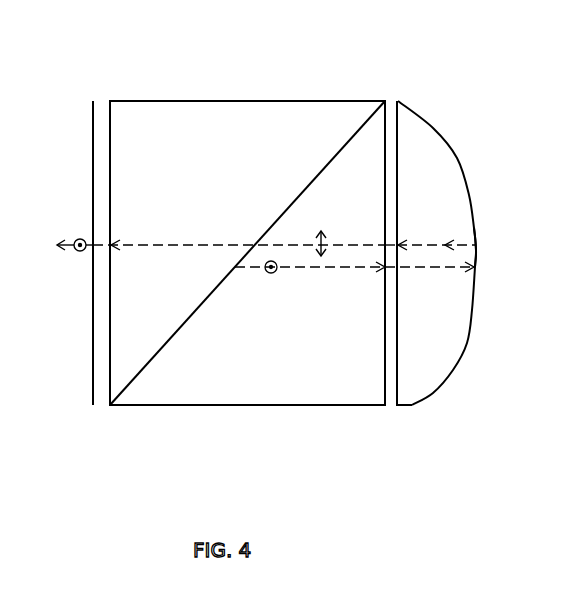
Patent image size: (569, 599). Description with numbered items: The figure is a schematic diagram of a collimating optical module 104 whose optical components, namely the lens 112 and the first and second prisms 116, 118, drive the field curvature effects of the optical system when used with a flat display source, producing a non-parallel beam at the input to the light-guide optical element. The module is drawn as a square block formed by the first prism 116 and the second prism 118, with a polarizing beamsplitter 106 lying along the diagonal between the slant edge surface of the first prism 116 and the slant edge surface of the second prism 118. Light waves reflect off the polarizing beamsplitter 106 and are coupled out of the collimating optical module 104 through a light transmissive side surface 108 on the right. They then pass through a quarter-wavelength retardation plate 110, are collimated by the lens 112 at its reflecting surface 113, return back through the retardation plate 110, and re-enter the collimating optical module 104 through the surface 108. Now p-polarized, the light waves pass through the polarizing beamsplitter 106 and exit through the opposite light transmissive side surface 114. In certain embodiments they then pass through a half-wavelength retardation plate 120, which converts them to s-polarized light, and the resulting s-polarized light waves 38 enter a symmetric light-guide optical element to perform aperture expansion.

The collimating optical module 104 is at (324, 76).
The polarizing beamsplitter 106 is at (318, 174).
The light transmissive side surface 108 is at (377, 378).
The quarter-wavelength retardation plate 110 is at (400, 383).
The lens 112 is at (442, 160).
The reflecting surface 113 is at (475, 228).
The light transmissive side surface 114 is at (112, 338).
The first prism 116 is at (263, 383).
The second prism 118 is at (170, 135).
The half-wavelength retardation plate 120 is at (92, 368).
The s-polarized light waves 38 is at (262, 268).